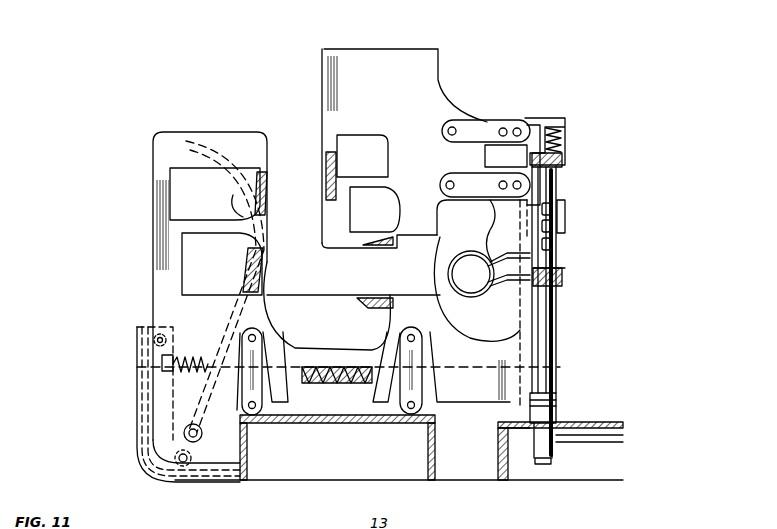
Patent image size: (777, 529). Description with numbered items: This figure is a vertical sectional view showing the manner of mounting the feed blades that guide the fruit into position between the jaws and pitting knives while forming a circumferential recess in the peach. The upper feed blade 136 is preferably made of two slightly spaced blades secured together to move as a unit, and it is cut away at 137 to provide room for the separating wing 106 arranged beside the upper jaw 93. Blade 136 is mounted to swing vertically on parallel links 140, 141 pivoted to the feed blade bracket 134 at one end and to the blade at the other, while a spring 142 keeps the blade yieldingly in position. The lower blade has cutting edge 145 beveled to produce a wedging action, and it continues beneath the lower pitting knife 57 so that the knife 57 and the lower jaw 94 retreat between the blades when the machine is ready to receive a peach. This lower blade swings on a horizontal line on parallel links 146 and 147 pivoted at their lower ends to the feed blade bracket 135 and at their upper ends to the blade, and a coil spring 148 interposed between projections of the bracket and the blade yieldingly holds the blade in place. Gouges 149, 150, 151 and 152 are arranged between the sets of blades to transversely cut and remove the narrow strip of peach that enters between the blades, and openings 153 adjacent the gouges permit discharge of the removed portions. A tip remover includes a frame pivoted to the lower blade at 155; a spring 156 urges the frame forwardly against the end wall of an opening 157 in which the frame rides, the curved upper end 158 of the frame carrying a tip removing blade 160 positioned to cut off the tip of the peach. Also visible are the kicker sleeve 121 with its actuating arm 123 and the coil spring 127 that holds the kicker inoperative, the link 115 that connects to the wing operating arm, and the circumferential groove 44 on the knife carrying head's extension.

The upper feed blade 136 is at (350, 66).
The cutting edge 145 is at (236, 146).
The gouge 149 is at (264, 182).
The gouge 150 is at (330, 180).
The openings 153 is at (215, 194).
The upper end of frame 158 is at (250, 213).
The opening 157 is at (222, 264).
The tip removing blade 160 is at (262, 283).
The spring 156 is at (203, 348).
The parallel link 146 is at (262, 366).
The pivot 155 is at (146, 442).
The parallel link 140 is at (491, 129).
The feed blade bracket 134 is at (540, 127).
The spring 142 is at (565, 160).
The parallel link 141 is at (462, 192).
The cut-away portion 137 is at (413, 232).
The upper jaw 93 is at (480, 246).
The gouge 152 is at (382, 250).
The gouge 151 is at (354, 302).
The lower jaw 94 is at (444, 284).
The pitting knife 57 is at (477, 252).
The wing 106 is at (563, 223).
The coil spring 127 is at (560, 270).
The parallel link 147 is at (422, 372).
The coil spring 148 is at (335, 384).
The feed blade bracket 135 is at (436, 458).
The sleeve 121 is at (547, 377).
The actuating arm 123 is at (557, 405).
The circumferential groove 44 is at (552, 450).
The link 115 is at (595, 443).